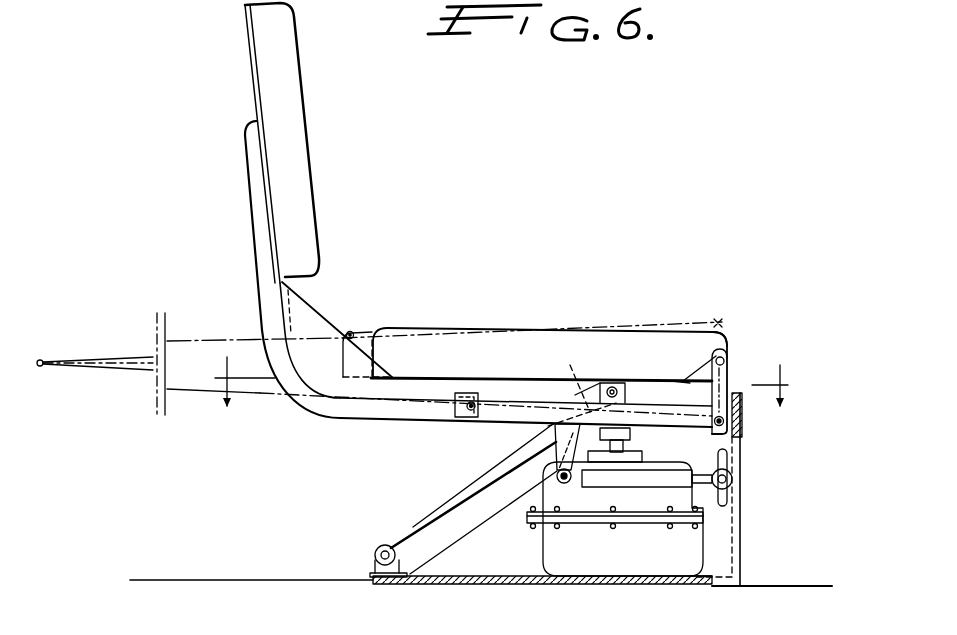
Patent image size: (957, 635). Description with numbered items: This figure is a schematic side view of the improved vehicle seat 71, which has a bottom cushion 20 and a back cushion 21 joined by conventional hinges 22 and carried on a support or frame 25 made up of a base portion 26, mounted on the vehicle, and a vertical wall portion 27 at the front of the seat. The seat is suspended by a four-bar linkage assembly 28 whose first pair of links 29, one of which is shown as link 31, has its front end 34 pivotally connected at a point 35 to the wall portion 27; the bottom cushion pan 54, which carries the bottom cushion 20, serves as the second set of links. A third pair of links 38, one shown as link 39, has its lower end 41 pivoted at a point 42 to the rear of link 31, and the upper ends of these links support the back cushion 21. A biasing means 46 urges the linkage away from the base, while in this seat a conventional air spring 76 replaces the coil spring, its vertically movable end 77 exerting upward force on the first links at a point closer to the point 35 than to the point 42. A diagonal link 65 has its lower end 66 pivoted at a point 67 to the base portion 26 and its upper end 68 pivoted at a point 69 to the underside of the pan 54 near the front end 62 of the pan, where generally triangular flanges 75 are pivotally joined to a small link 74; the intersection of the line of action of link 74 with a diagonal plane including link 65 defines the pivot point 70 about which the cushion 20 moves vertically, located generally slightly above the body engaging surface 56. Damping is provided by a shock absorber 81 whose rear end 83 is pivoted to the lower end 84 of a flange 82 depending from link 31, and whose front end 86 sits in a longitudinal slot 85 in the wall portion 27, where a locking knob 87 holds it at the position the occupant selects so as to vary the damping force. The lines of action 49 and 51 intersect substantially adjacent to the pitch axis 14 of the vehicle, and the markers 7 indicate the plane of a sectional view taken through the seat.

The section line 7- 7 is at (505, 381).
The pitch axis 14 is at (44, 358).
The bottom cushion 20 is at (487, 351).
The back cushion 21 is at (287, 108).
The hinges 22 is at (353, 332).
The support or frame 25 is at (504, 586).
The base portion 26 is at (690, 578).
The vertical wall portion 27 is at (745, 421).
The four-bar linkage assembly 28 is at (370, 462).
The first pair of links 29 is at (484, 422).
The link 31 is at (523, 418).
The front end of link 34 is at (698, 455).
The pivot point 35 is at (743, 436).
The third pair of links 38 is at (255, 247).
The link 39 is at (303, 385).
The lower end of link 41 is at (418, 412).
The pivot point 42 is at (471, 400).
The biasing means 46 is at (718, 337).
The line of action 49 is at (118, 368).
The line of action 51 is at (100, 362).
The bottom cushion pan 54 is at (494, 376).
The outer body engaging surface 56 is at (656, 326).
The front end of pan 62 is at (676, 380).
The diagonal link 65 is at (452, 497).
The lower end of diagonal link 66 is at (423, 524).
The pivot point 67 is at (376, 551).
The upper end of diagonal link 68 is at (582, 383).
The pivot point 69 is at (626, 393).
The pivot point 70 is at (721, 321).
The improved seat 71 is at (453, 255).
The small link 74 is at (728, 370).
The triangular flanges 75 is at (704, 373).
The air spring 76 is at (727, 368).
The upper end of air spring 77 is at (630, 440).
The shock absorber 81 is at (620, 488).
The flange 82 is at (552, 443).
The rear end of shock absorber 83 is at (568, 484).
The lower end of flange 84 is at (552, 476).
The longitudinal slot 85 is at (726, 458).
The front end of shock absorber 86 is at (656, 526).
The locking knob 87 is at (727, 488).